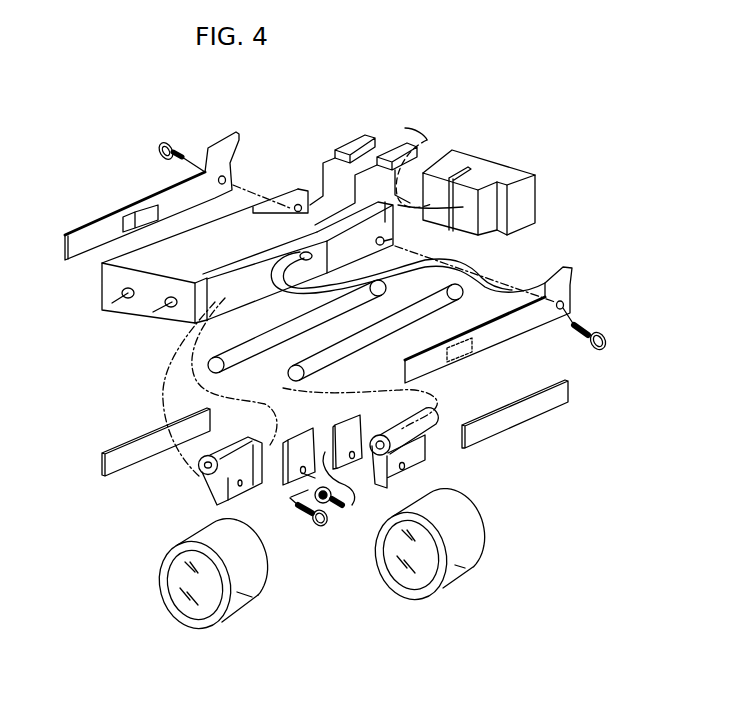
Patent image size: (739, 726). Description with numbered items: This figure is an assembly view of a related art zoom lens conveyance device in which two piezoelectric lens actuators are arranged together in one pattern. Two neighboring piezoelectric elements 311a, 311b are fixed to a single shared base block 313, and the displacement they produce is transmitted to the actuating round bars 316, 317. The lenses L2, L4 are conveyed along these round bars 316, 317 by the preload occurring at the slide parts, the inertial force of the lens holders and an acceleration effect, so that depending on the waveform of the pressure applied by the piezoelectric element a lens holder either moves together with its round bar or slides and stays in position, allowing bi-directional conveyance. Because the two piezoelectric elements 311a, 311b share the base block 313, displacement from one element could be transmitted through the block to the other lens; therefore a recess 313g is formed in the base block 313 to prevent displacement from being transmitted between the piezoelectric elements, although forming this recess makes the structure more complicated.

The piezoelectric element 311a is at (340, 148).
The piezoelectric element 311b is at (400, 144).
The base block 313 is at (513, 172).
The recess 313g is at (468, 167).
The actuating round bar 316 is at (160, 362).
The actuating round bar 317 is at (467, 304).
The lens L2 is at (256, 597).
The lens L4 is at (473, 567).